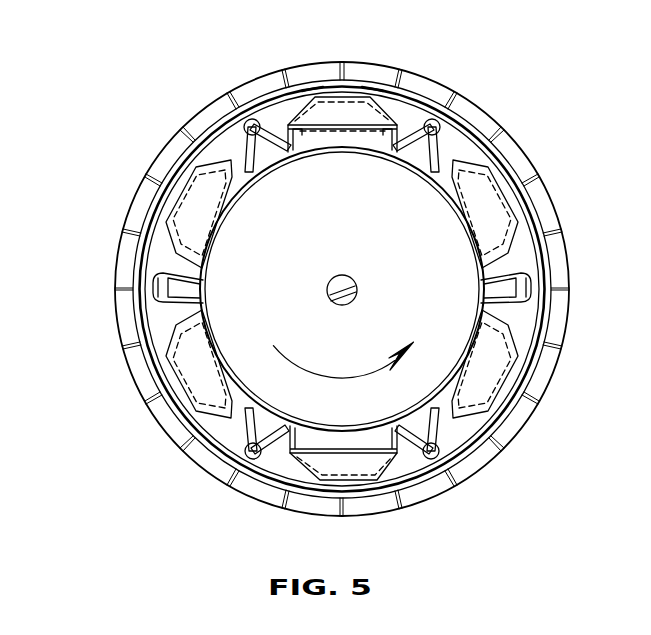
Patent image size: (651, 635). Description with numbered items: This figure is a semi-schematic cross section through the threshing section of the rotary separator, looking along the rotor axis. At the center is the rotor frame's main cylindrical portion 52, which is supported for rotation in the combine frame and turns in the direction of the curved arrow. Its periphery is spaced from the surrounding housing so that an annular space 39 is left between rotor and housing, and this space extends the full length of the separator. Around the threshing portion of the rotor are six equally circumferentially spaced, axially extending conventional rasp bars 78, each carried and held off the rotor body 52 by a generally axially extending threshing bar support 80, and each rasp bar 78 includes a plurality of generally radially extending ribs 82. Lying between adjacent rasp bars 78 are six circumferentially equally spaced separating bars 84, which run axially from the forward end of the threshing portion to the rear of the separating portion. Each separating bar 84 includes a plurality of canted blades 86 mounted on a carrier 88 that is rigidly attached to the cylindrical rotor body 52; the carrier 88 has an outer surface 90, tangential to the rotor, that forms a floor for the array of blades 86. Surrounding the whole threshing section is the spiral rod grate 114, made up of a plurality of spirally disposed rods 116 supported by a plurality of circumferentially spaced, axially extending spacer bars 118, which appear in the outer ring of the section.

The annular space 39 is at (222, 147).
The main cylindrical portion 52 is at (477, 253).
The rasp bar 78 is at (228, 103).
The threshing bar support 80 is at (252, 152).
The rib 82 is at (253, 118).
The separating bar 84 is at (325, 84).
The canted blade 86 is at (361, 84).
The carrier 88 is at (293, 135).
The outer surface 90 is at (367, 133).
The spiral rod grate 114 is at (118, 273).
The spirally disposed rod 116 is at (132, 307).
The spacer bar 118 is at (133, 350).